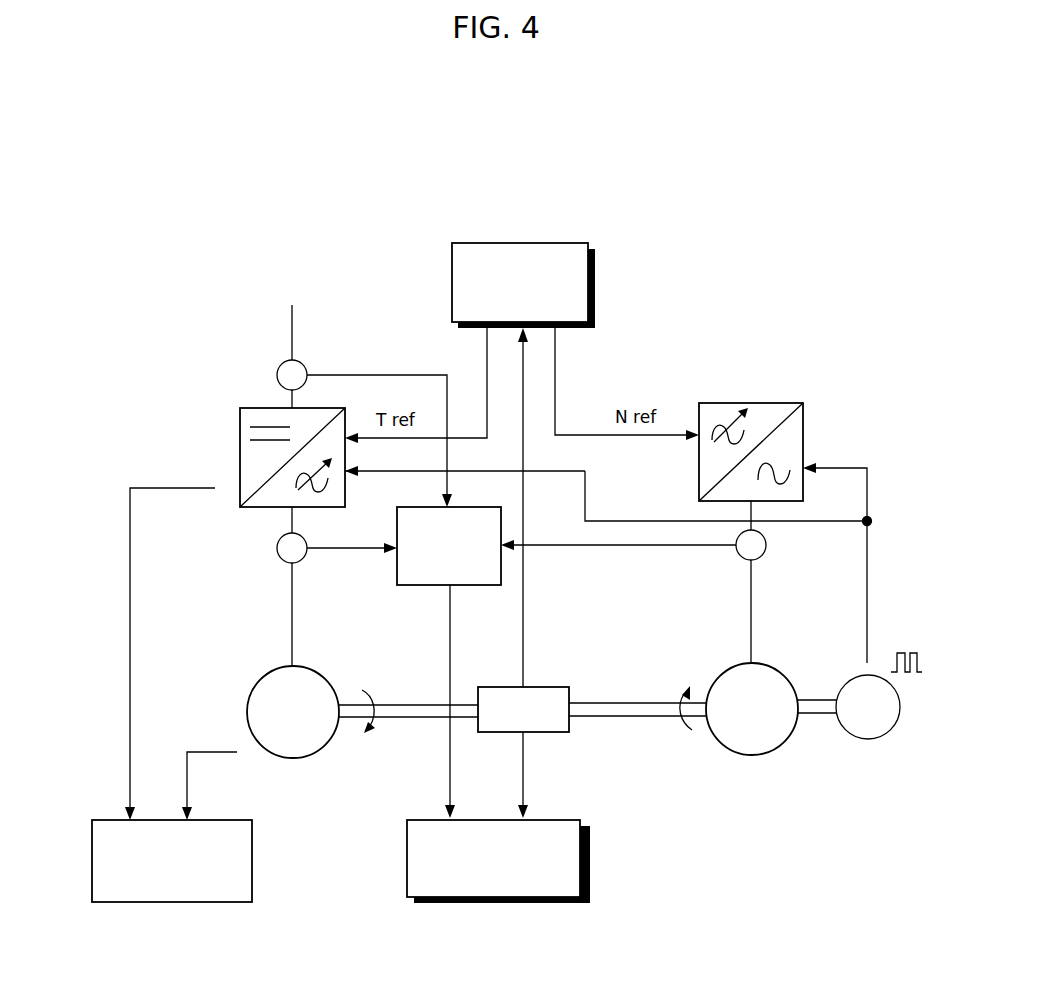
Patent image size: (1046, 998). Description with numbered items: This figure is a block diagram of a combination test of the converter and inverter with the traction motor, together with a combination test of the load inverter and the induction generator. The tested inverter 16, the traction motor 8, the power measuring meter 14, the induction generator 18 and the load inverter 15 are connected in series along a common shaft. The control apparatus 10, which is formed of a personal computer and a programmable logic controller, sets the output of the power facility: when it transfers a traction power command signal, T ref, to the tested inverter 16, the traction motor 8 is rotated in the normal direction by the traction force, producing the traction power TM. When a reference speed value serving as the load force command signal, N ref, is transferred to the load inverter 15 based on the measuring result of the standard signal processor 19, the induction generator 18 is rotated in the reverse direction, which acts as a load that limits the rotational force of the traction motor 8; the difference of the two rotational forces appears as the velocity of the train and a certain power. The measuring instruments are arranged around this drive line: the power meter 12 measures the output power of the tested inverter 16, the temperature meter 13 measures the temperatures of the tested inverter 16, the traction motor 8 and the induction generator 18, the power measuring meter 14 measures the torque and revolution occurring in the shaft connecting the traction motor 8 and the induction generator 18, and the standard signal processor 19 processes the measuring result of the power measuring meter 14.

The traction motor 8 is at (297, 758).
The control apparatus 10 is at (595, 283).
The power meter 12 is at (415, 585).
The temperature meter 13 is at (252, 858).
The power measuring meter 14 is at (548, 687).
The load inverter 15 is at (750, 403).
The inverter 16 is at (265, 408).
The induction generator 18 is at (748, 755).
The standard signal processor 19 is at (590, 862).